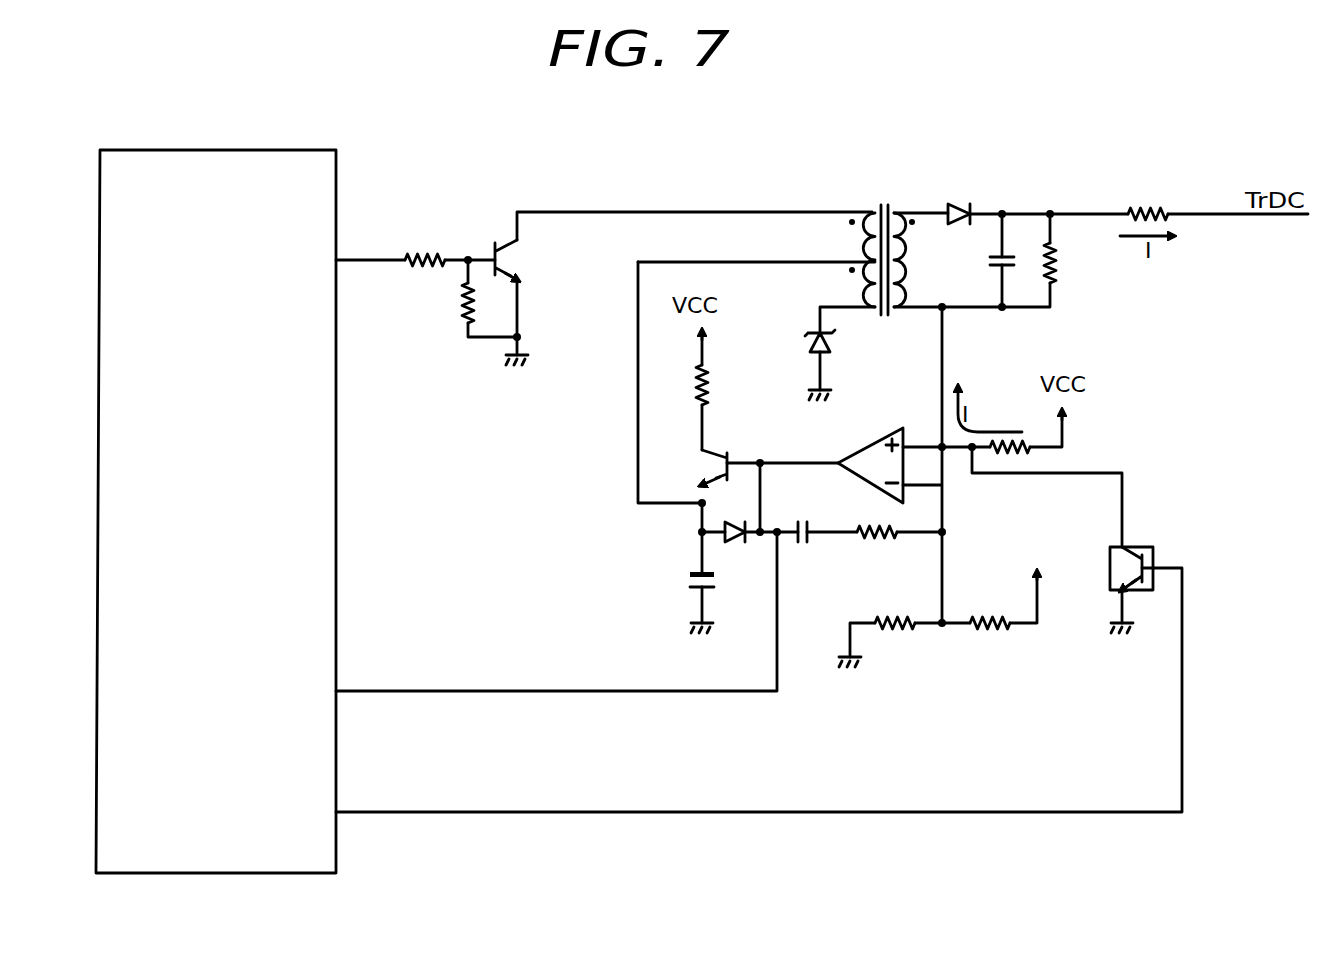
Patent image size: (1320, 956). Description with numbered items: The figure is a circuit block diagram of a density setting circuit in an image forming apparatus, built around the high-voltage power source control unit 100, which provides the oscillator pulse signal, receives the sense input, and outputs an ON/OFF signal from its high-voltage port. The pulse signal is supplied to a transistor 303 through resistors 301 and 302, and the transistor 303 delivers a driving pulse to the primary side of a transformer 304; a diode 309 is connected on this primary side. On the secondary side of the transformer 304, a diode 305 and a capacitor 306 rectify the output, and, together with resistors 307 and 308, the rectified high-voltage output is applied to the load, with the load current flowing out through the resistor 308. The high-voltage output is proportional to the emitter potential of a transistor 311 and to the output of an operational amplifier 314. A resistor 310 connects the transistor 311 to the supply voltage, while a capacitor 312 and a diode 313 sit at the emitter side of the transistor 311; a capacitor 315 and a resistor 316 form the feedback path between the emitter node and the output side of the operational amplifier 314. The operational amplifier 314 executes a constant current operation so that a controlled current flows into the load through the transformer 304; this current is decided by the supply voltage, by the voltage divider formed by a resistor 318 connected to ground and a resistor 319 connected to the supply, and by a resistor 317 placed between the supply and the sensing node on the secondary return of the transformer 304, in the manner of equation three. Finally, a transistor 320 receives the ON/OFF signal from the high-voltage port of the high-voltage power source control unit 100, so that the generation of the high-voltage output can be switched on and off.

The high-voltage power source control unit 100 is at (304, 150).
The resistor 301 is at (433, 249).
The resistor 302 is at (459, 302).
The transistor 303 is at (520, 262).
The transformer 304 is at (882, 211).
The diode 305 is at (958, 206).
The capacitor 306 is at (990, 262).
The resistor 307 is at (1059, 262).
The resistor 308 is at (1150, 205).
The diode 309 is at (831, 347).
The resistor 310 is at (713, 384).
The transistor 311 is at (703, 466).
The capacitor 312 is at (685, 573).
The diode 313 is at (737, 545).
The operational amplifier 314 is at (869, 445).
The capacitor 315 is at (810, 541).
The resistor 316 is at (878, 541).
The resistor 317 is at (1027, 442).
The resistor 318 is at (900, 633).
The resistor 319 is at (988, 632).
The transistor 320 is at (1138, 546).